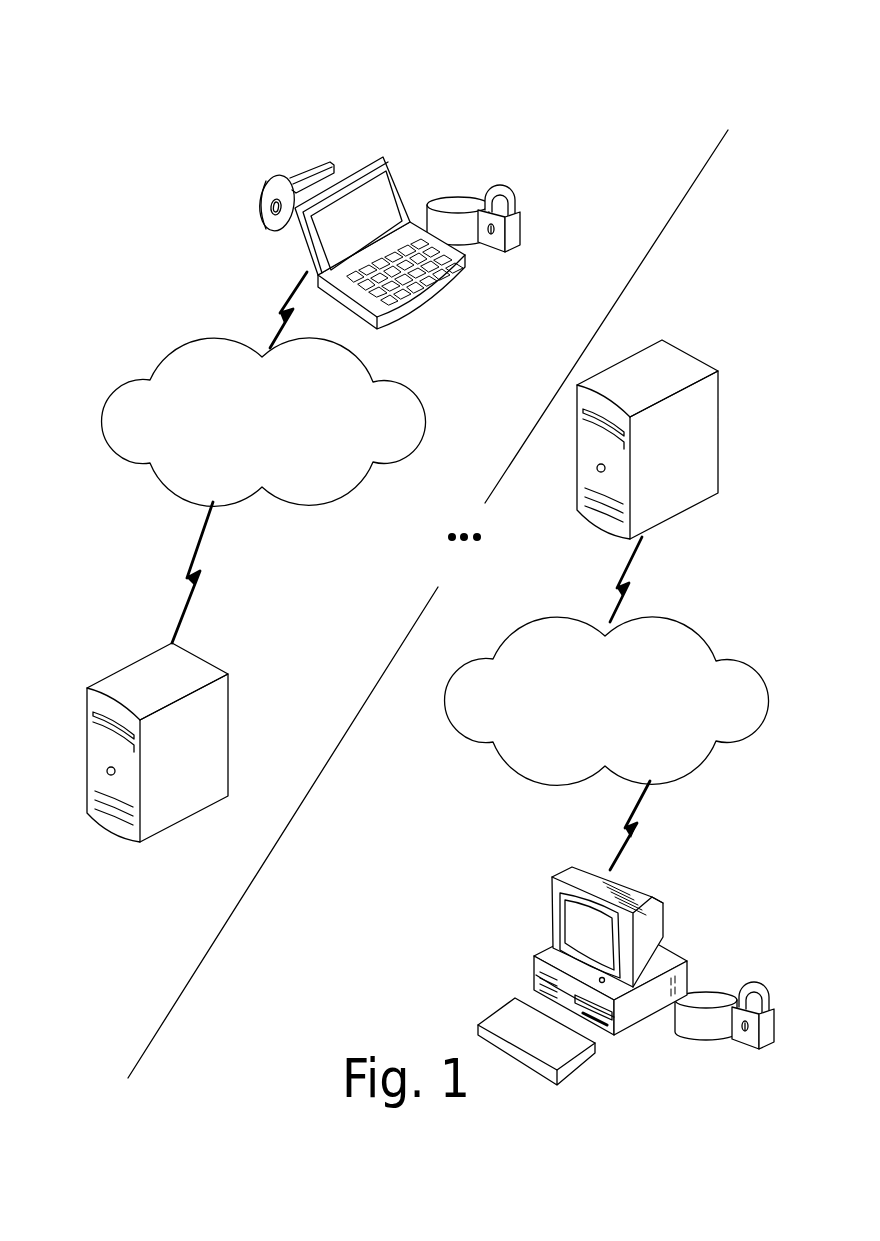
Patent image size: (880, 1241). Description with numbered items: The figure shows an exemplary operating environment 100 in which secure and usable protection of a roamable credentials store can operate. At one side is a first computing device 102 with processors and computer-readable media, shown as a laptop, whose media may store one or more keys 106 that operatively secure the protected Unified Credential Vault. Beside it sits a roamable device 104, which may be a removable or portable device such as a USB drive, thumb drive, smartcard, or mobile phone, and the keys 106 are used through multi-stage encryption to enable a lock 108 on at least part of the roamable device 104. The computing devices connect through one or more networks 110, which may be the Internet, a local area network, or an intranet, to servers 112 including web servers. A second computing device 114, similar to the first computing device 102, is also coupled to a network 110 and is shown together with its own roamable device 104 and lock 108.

The operating environment 100 is at (716, 70).
The first computing device 102 is at (352, 168).
The roamable device 104 is at (462, 198).
The keys 106 is at (260, 190).
The lock 108 is at (515, 212).
The network 110 is at (215, 338).
The server 112 is at (228, 673).
The second computing device 114 is at (536, 958).